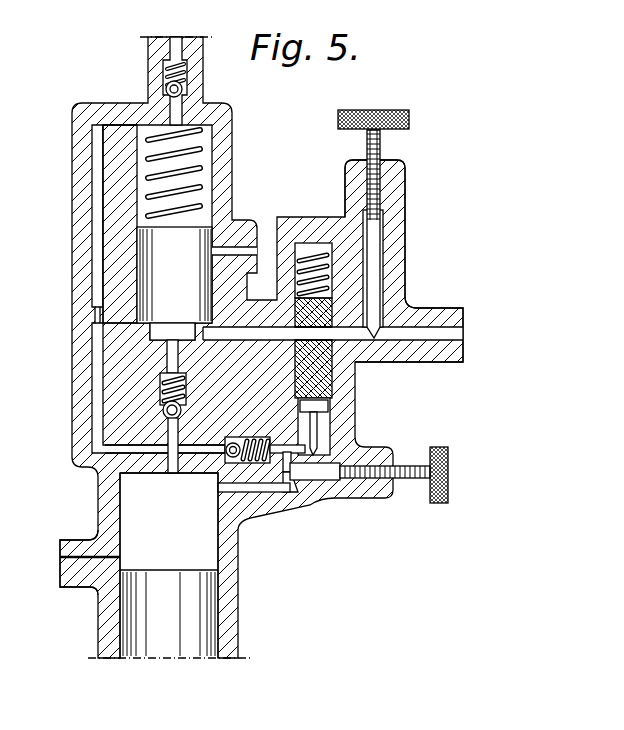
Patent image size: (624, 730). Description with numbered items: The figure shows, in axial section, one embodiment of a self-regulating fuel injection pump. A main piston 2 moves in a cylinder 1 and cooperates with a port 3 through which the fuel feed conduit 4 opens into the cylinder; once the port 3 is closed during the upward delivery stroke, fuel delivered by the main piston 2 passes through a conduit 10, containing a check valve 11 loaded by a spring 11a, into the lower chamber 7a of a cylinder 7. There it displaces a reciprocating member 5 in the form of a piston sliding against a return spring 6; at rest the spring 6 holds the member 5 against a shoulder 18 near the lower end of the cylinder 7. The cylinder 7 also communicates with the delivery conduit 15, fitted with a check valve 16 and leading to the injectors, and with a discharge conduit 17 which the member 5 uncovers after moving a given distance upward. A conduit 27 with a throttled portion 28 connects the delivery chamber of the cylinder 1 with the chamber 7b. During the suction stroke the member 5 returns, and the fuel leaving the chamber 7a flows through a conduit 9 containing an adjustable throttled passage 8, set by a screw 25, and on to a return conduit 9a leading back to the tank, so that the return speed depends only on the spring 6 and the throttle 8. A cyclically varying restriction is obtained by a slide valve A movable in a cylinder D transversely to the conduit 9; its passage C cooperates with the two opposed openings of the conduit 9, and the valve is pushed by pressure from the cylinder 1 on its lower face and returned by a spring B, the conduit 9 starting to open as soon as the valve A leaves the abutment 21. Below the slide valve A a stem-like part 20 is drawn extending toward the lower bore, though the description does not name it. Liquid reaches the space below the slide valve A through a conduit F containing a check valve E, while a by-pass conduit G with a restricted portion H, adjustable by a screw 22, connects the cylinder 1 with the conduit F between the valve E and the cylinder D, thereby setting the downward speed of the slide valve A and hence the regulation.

The cylinder 1 is at (218, 540).
The main piston 2 is at (185, 608).
The port 3 is at (120, 562).
The fuel feed conduit 4 is at (90, 562).
The reciprocating member 5 is at (155, 243).
The return spring 6 is at (145, 175).
The cylinder 7 is at (137, 200).
The lower chamber 7a is at (160, 334).
The chamber 7b is at (145, 146).
The throttled passage 8 is at (407, 304).
The conduit 9 is at (236, 332).
The return conduit 9a is at (433, 338).
The conduit 10 is at (158, 460).
The check valve 11 is at (166, 411).
The spring 11a is at (162, 388).
The delivery conduit 15 is at (177, 110).
The check valve 16 is at (185, 87).
The discharge conduit 17 is at (235, 248).
The shoulder 18 is at (172, 343).
The needle valve stem 20 is at (333, 413).
The abutment 21 is at (312, 252).
The screw 22 is at (365, 480).
The screw 25 is at (385, 148).
The conduit 27 is at (97, 273).
The throttled portion 28 is at (97, 314).
The slide valve A is at (320, 375).
The return spring B is at (330, 275).
The passage C is at (327, 338).
The cylinder D is at (330, 400).
The check valve E is at (165, 473).
The conduit F is at (230, 475).
The by-pass conduit G is at (280, 489).
The restricted portion H is at (290, 486).